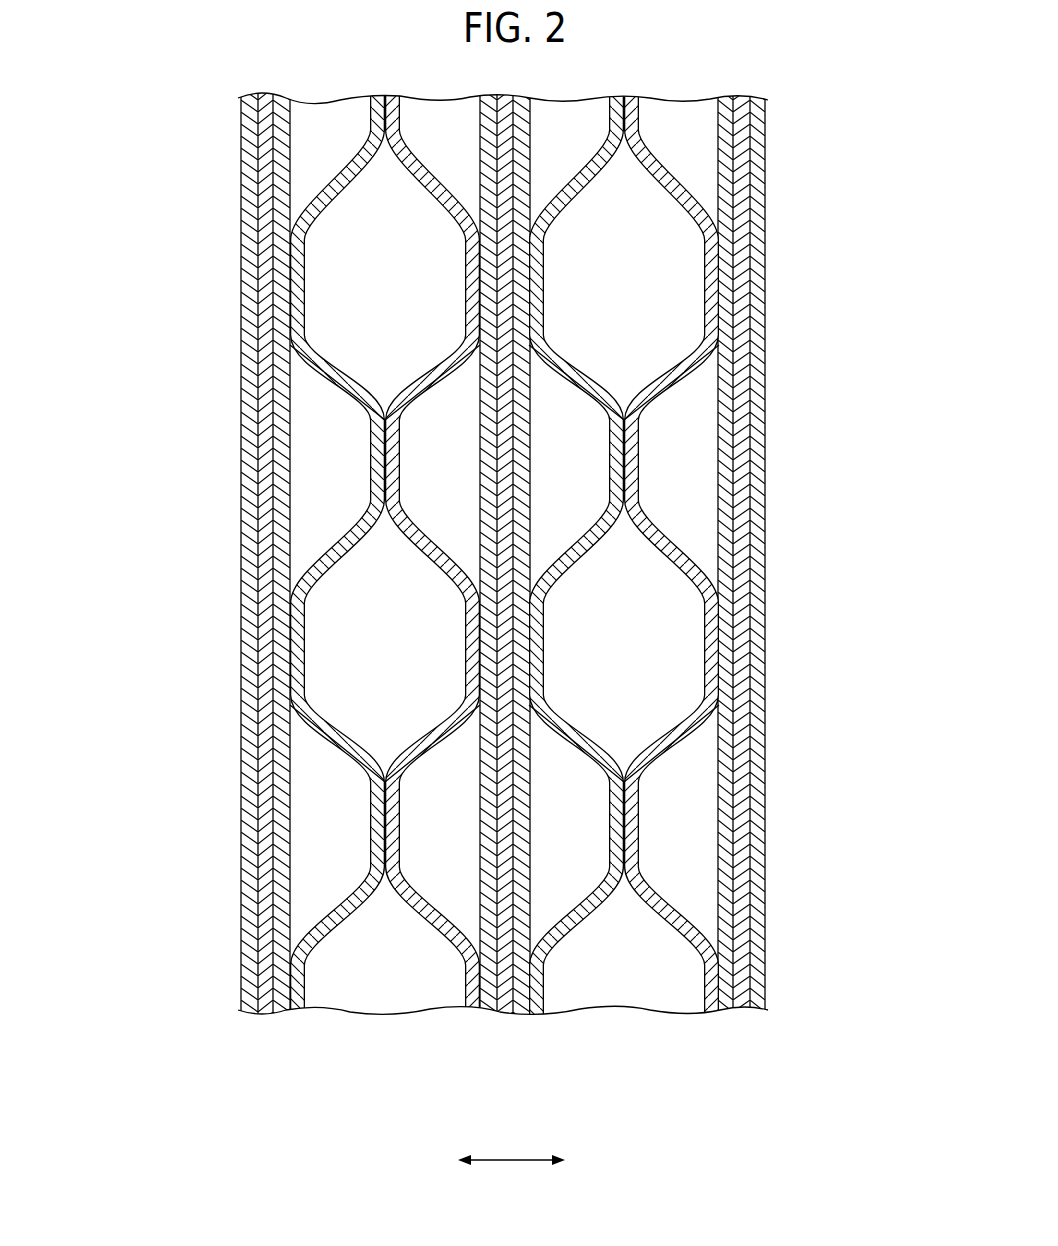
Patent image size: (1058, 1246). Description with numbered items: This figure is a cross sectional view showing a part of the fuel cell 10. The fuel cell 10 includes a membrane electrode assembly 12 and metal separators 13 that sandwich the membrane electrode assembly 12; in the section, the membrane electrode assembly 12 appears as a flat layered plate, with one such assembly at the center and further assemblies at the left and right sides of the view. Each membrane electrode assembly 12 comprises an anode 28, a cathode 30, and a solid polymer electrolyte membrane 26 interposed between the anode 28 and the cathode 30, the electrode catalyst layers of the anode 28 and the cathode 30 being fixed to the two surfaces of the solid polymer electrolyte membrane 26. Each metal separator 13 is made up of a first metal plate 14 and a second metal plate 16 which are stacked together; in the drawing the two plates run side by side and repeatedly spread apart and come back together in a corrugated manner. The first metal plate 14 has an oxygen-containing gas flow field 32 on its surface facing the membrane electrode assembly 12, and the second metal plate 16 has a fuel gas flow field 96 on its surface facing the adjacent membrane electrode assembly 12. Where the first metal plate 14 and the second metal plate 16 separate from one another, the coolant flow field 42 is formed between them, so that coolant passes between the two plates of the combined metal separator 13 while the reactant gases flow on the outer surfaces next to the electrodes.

The fuel cell 10 is at (670, 66).
The membrane electrode assembly 12 is at (264, 1014).
The metal separator 13 is at (504, 555).
The first metal plate 14 is at (352, 771).
The second metal plate 16 is at (396, 736).
The solid polymer electrolyte membrane 26 is at (503, 1015).
The anode 28 is at (490, 1015).
The cathode 30 is at (523, 1015).
The oxygen-containing gas flow field 32 is at (443, 457).
The coolant flow field 42 is at (505, 286).
The fuel gas flow field 96 is at (568, 457).